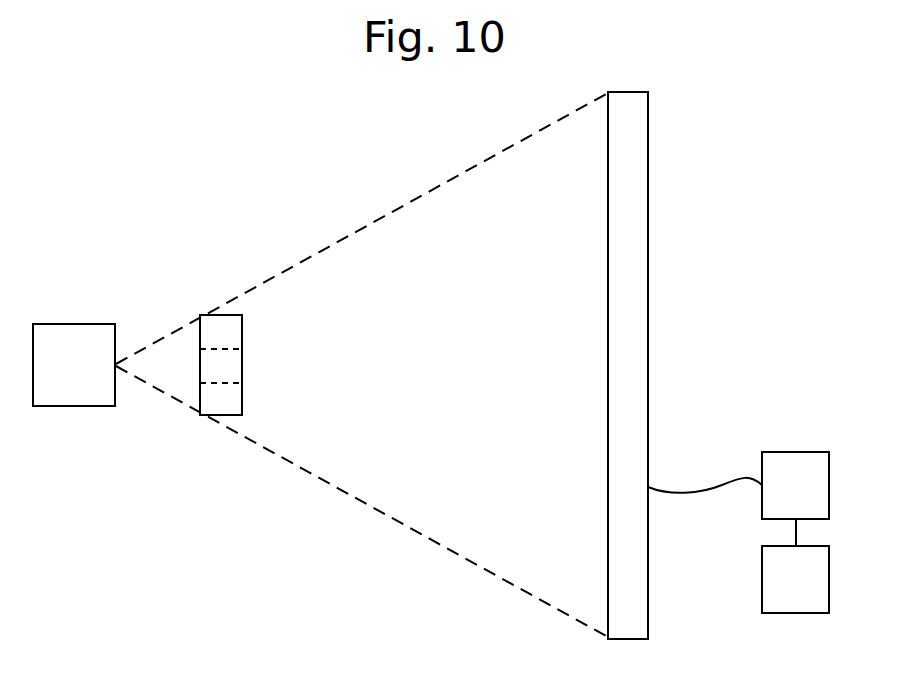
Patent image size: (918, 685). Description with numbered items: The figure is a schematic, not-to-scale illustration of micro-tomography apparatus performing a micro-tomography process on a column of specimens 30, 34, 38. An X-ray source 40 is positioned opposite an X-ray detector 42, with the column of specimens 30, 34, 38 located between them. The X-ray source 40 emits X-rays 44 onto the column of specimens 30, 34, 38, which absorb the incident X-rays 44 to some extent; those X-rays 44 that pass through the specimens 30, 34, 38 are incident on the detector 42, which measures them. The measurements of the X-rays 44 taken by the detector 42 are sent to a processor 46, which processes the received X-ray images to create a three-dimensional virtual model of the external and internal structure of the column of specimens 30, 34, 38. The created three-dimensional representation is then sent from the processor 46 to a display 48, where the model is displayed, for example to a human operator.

The specimen 30 is at (233, 396).
The specimen 34 is at (232, 366).
The specimen 38 is at (233, 333).
The X-ray source 40 is at (74, 365).
The X-ray detector 42 is at (633, 260).
The X-rays 44 is at (412, 200).
The processor 46 is at (738, 485).
The display 48 is at (795, 566).